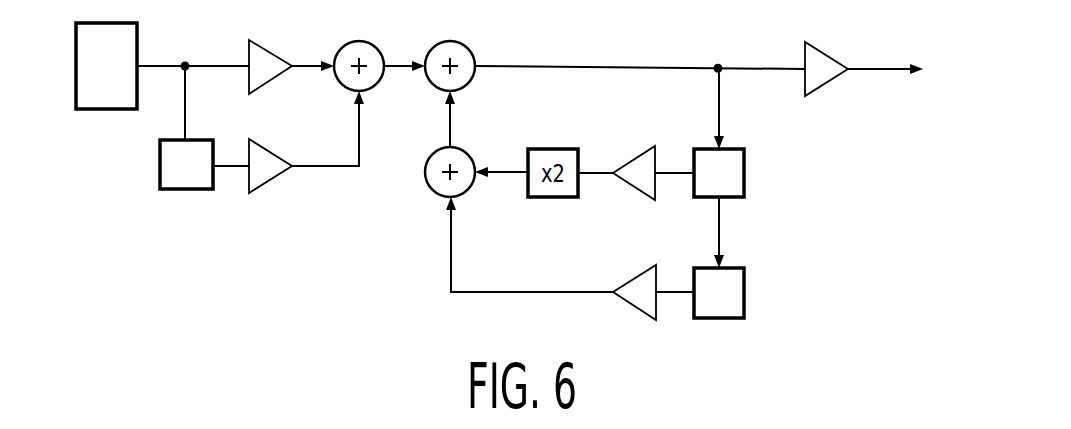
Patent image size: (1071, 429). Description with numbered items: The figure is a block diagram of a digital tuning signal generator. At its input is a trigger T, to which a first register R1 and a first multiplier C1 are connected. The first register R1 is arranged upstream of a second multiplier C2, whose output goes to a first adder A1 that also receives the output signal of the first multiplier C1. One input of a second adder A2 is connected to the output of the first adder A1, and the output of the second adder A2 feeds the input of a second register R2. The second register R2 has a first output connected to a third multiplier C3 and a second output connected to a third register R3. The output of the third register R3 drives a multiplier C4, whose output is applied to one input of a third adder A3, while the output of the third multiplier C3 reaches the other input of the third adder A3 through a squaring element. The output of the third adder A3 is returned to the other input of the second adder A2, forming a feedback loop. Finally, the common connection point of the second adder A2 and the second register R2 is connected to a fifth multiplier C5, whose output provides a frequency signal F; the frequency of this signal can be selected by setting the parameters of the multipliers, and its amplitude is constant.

The trigger T is at (106, 84).
The first register R1 is at (186, 164).
The second register R2 is at (719, 173).
The third register R3 is at (719, 293).
The first multiplier C1 is at (270, 48).
The second multiplier C2 is at (270, 182).
The third multiplier C3 is at (634, 156).
The multiplier C4 is at (634, 310).
The fifth multiplier C5 is at (826, 50).
The first adder A1 is at (359, 47).
The second adder A2 is at (450, 47).
The third adder A3 is at (441, 186).
The frequency signal F is at (885, 55).